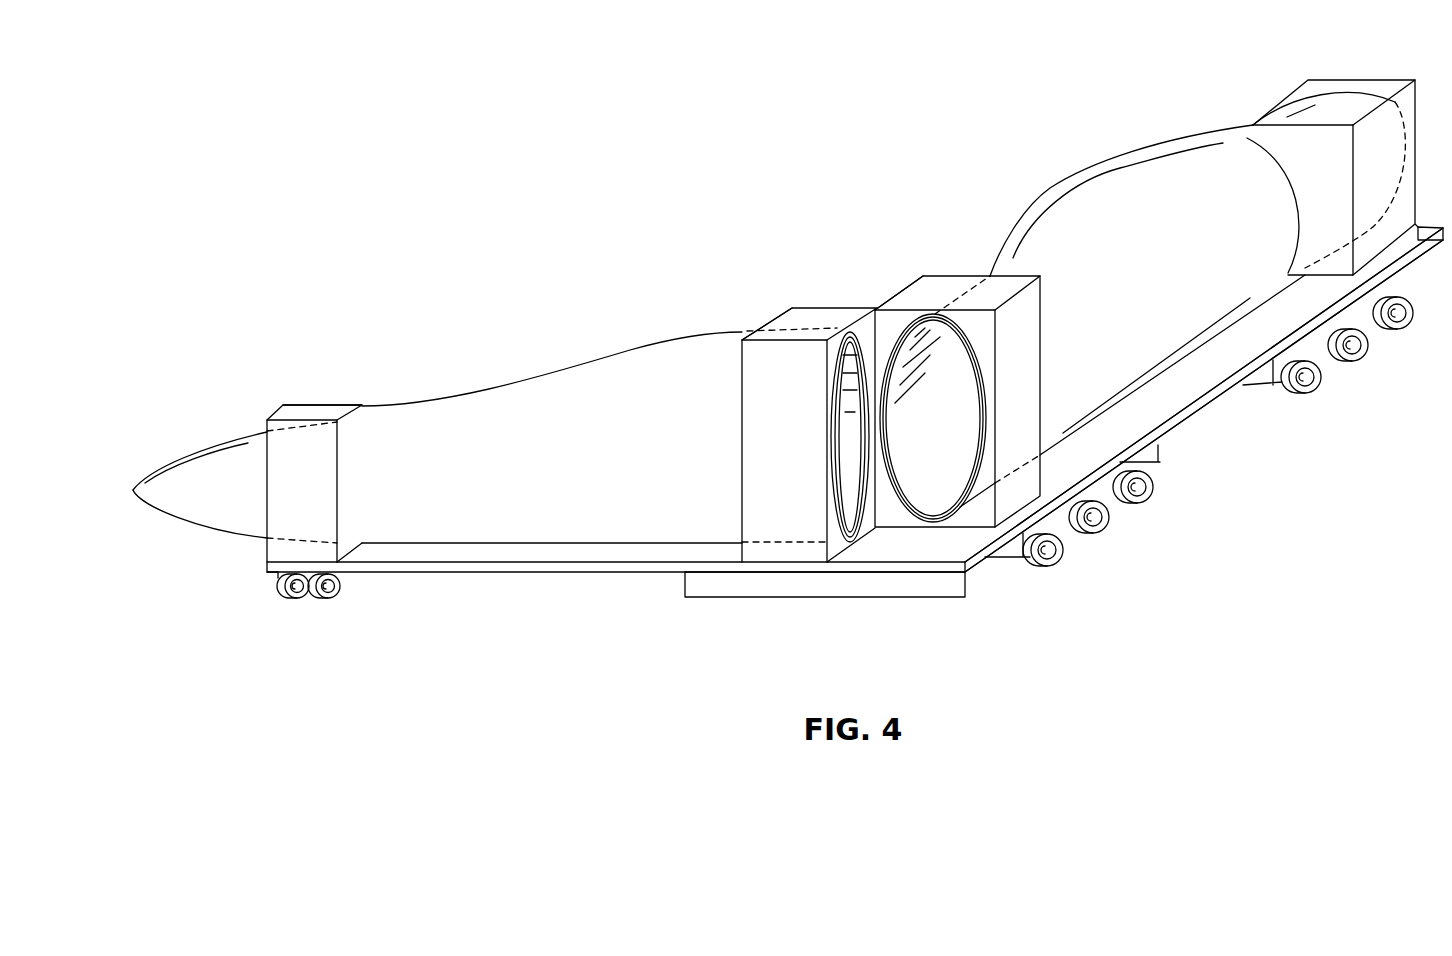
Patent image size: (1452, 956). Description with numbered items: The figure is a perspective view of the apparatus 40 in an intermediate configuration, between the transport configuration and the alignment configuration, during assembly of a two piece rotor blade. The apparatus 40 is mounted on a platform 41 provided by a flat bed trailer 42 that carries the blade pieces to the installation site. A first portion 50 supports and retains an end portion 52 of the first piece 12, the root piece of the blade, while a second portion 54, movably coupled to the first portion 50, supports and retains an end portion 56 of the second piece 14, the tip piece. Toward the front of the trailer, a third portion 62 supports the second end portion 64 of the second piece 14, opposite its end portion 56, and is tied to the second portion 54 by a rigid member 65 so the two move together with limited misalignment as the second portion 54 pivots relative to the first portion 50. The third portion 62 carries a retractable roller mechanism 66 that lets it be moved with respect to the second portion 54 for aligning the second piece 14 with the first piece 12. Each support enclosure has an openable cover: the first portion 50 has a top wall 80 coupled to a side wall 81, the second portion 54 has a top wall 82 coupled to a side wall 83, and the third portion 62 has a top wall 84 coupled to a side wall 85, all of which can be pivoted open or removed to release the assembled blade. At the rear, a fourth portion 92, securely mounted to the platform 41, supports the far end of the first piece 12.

The first piece 12 is at (769, 330).
The second piece 14 is at (533, 548).
The apparatus 40 is at (769, 425).
The platform 41 is at (1150, 408).
The flat bed trailer 42 is at (1205, 408).
The first portion 50 is at (955, 444).
The end portion 52 is at (948, 460).
The second portion 54 is at (785, 550).
The end portion 56 is at (797, 332).
The third portion 62 is at (293, 471).
The second end portion 64 is at (213, 518).
The rigid member 65 is at (523, 380).
The retractable roller mechanism 66 is at (332, 597).
The top wall 80 is at (927, 292).
The side wall 81 is at (905, 285).
The top wall 82 is at (792, 308).
The side wall 83 is at (783, 320).
The top wall 84 is at (323, 415).
The side wall 85 is at (302, 402).
The fourth portion 92 is at (1393, 97).